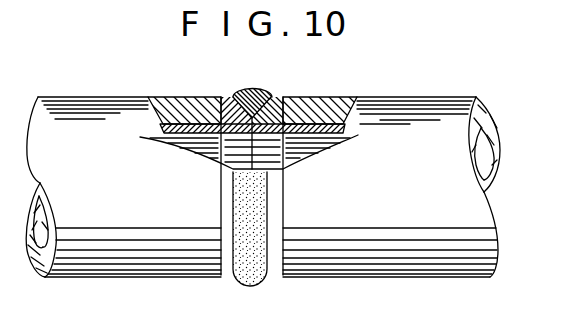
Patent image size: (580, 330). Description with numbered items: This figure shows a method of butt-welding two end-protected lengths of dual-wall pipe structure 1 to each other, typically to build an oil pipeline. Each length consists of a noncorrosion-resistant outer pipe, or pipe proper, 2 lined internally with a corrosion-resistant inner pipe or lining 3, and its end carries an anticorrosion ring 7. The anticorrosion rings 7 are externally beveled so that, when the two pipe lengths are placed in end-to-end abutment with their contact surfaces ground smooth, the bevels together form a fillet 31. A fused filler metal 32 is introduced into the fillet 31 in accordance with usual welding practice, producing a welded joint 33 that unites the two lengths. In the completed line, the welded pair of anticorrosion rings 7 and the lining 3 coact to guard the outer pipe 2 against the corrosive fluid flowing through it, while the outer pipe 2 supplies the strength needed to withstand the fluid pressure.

The dual-wall pipe structure 1 is at (94, 95).
The outer pipe 2 is at (176, 105).
The corrosion-resistant inner pipe or lining 3 is at (165, 128).
The anticorrosion ring 7 is at (222, 268).
The fillet 31 is at (263, 93).
The fused filler metal 32 is at (246, 93).
The welded joint 33 is at (277, 186).